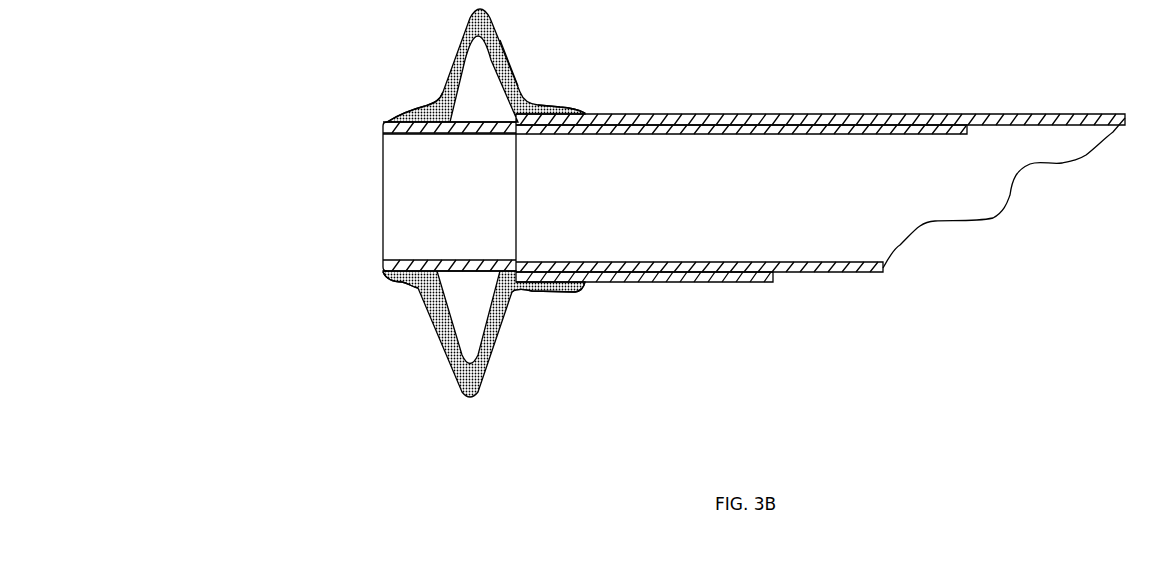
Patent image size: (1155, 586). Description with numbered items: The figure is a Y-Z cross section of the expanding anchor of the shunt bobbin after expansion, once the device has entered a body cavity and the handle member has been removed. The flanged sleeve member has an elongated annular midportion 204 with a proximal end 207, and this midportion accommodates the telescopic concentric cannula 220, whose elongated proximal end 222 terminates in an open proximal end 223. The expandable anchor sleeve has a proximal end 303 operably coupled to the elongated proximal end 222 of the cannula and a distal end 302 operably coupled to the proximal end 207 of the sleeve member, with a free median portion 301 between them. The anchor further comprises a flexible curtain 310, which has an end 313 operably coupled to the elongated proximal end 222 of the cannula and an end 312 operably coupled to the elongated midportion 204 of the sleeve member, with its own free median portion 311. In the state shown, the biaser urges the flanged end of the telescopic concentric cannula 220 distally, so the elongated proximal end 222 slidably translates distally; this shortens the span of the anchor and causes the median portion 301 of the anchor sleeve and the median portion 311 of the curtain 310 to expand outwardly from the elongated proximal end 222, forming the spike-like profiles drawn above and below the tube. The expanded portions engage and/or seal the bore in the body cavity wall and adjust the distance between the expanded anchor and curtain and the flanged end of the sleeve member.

The telescopic concentric cannula 220 is at (883, 270).
The elongated annular midportion 204 is at (712, 282).
The elongated proximal end 222 is at (462, 133).
The open proximal end 223 is at (381, 180).
The proximal end of sleeve member 207 is at (413, 135).
The free median portion 301 is at (513, 50).
The free median portion 311 is at (520, 75).
The distal end 312 is at (547, 100).
The proximal end 303 is at (420, 110).
The flexible curtain 310 is at (510, 342).
The distal end 302 is at (557, 292).
The distal end 313 is at (418, 287).